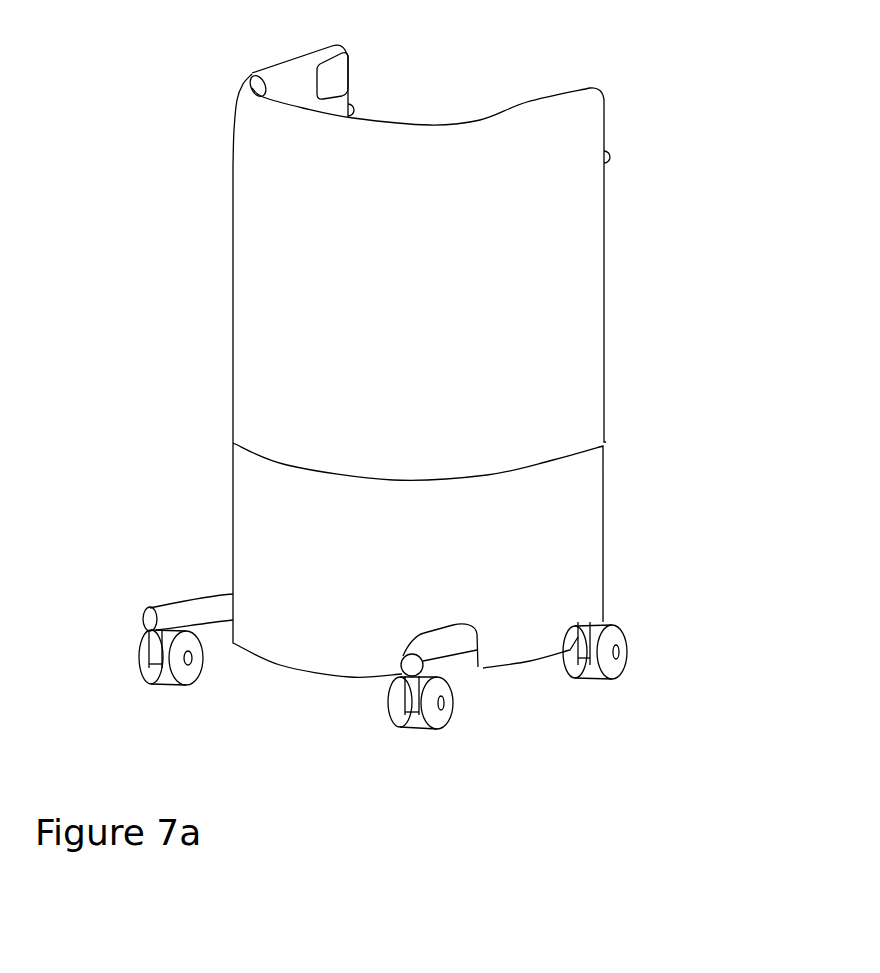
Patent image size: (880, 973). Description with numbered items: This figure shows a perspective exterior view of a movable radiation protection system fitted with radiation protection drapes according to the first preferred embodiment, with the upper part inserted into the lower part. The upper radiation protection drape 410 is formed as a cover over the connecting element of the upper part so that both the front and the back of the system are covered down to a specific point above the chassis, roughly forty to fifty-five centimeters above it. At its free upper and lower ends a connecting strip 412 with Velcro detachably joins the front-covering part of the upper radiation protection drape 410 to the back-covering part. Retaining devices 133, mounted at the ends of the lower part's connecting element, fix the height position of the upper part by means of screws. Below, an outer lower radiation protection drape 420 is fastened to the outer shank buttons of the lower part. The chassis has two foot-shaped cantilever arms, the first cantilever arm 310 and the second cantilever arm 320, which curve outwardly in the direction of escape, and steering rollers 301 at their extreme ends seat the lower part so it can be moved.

The upper radiation protection drape 410 is at (580, 268).
The connecting strip 412 is at (338, 70).
The retaining device 133 is at (357, 108).
The outer lower radiation protection drape 420 is at (570, 514).
The first cantilever arm 310 is at (193, 610).
The second cantilever arm 320 is at (445, 642).
The steering roller 301 is at (143, 667).